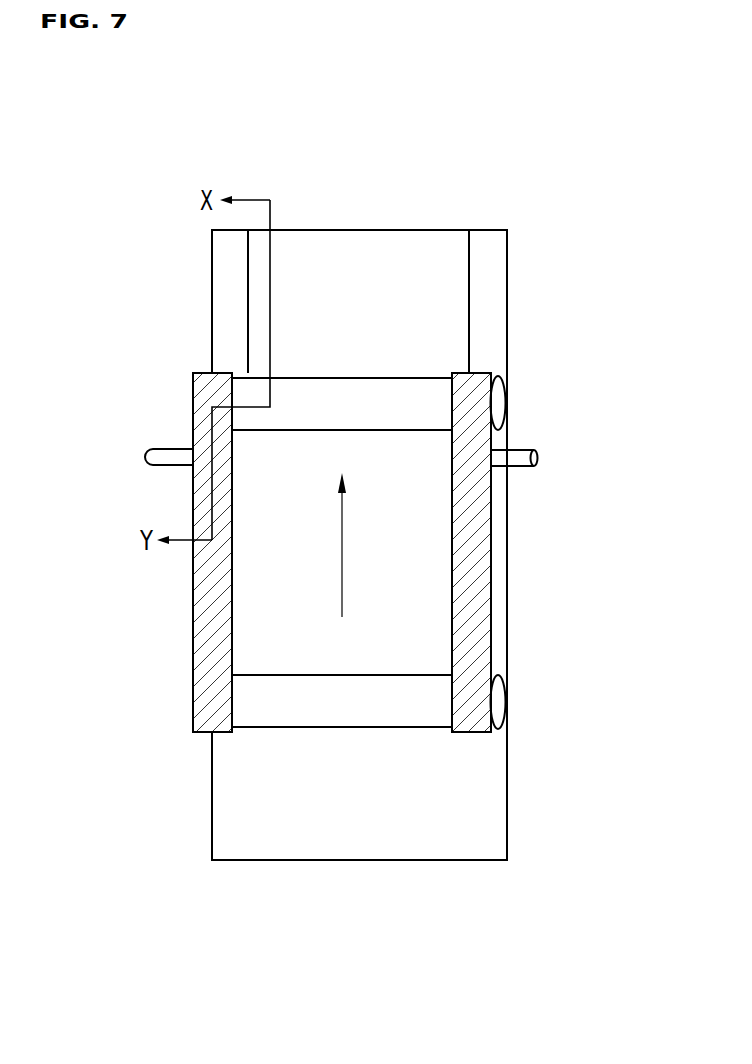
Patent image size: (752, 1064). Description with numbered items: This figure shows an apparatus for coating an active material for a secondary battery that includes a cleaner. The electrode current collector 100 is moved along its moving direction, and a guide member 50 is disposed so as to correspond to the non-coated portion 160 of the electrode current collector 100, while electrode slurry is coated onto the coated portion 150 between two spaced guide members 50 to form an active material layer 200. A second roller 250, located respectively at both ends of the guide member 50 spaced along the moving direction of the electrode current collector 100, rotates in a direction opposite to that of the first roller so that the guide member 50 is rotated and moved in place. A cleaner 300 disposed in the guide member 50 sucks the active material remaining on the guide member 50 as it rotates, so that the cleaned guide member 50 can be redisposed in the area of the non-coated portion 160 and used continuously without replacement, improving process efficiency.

The guide member 50 is at (483, 552).
The electrode current collector 100 is at (217, 815).
The coated portion 150 is at (291, 230).
The non-coated portion 160 is at (223, 292).
The active material layer 200 is at (375, 290).
The second roller 250 is at (500, 400).
The cleaner 300 is at (537, 457).